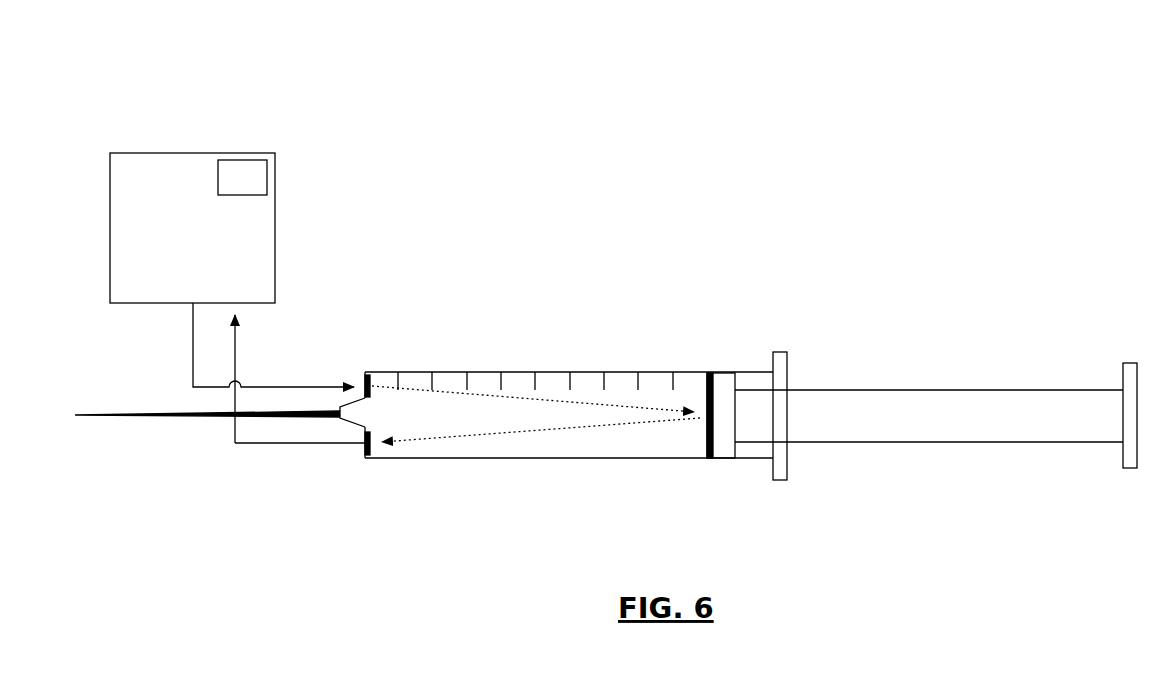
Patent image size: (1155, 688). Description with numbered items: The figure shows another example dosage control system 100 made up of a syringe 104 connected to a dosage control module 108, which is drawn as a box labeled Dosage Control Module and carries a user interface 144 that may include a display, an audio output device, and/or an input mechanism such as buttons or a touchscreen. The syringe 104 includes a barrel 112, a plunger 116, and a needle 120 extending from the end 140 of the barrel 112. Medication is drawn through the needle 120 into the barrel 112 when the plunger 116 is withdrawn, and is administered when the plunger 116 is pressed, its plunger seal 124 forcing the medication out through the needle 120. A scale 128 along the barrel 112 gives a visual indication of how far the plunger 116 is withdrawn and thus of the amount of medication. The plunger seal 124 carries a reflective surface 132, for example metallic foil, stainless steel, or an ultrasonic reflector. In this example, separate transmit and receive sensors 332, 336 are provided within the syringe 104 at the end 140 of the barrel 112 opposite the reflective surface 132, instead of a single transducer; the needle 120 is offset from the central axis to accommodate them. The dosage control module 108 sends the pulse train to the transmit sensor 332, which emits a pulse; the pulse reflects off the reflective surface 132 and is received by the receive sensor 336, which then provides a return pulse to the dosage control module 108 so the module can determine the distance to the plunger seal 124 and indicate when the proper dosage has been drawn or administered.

The dosage control system 100 is at (95, 80).
The syringe 104 is at (478, 534).
The dosage control module 108 is at (192, 153).
The barrel 112 is at (568, 458).
The plunger 116 is at (893, 442).
The needle 120 is at (207, 417).
The plunger seal 124 is at (723, 458).
The scale 128 is at (568, 372).
The reflective surface 132 is at (707, 397).
The end of the barrel 140 is at (367, 372).
The user interface 144 is at (267, 178).
The transmit sensor 332 is at (358, 381).
The receive sensor 336 is at (365, 455).